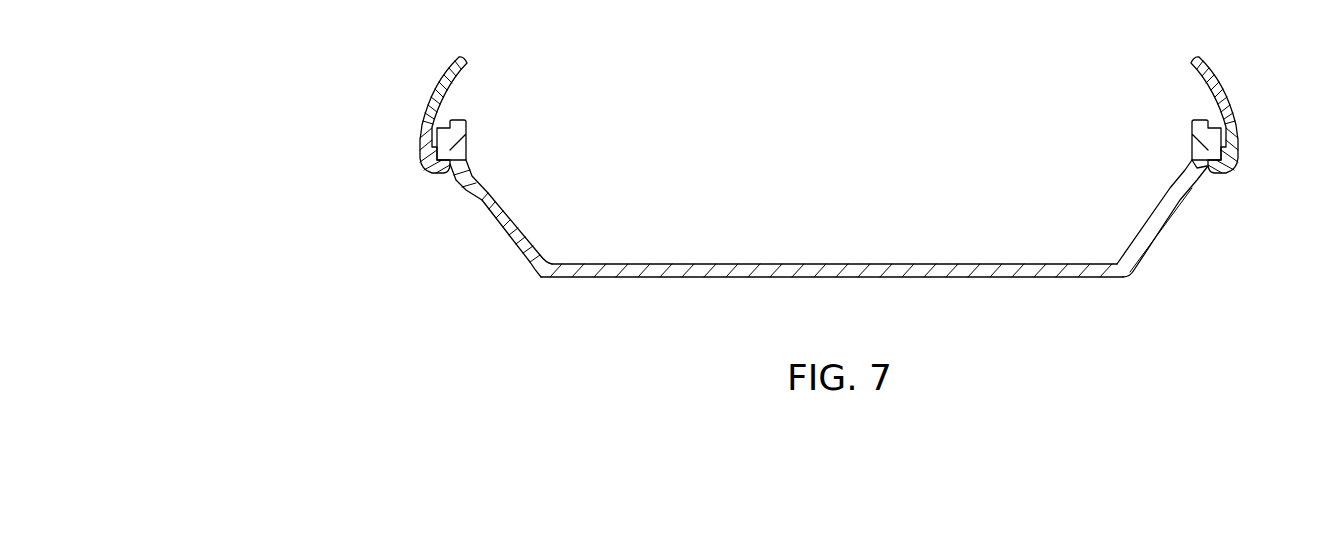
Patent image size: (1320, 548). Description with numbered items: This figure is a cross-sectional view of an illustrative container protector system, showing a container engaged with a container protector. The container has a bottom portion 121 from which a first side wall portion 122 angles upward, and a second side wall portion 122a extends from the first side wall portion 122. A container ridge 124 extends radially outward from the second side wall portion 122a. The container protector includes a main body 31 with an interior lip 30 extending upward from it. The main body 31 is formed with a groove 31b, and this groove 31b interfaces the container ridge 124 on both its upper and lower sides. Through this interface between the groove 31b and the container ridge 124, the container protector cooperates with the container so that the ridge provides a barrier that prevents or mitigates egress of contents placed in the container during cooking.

The interior lip 30 is at (1212, 76).
The main body 31 is at (1237, 137).
The groove 31b is at (1213, 118).
The bottom portion 121 is at (766, 263).
The first side wall portion 122 is at (1157, 217).
The second side wall portion 122a is at (1197, 120).
The container ridge 124 is at (1197, 150).